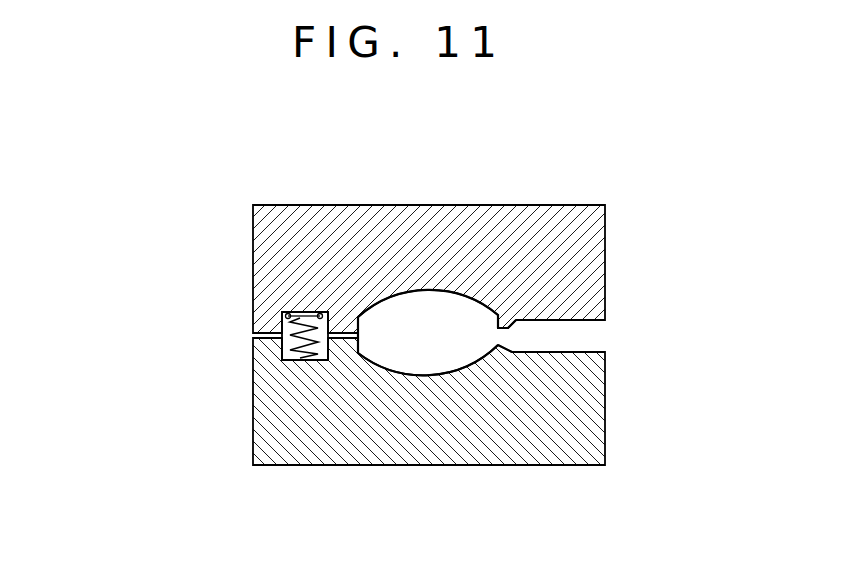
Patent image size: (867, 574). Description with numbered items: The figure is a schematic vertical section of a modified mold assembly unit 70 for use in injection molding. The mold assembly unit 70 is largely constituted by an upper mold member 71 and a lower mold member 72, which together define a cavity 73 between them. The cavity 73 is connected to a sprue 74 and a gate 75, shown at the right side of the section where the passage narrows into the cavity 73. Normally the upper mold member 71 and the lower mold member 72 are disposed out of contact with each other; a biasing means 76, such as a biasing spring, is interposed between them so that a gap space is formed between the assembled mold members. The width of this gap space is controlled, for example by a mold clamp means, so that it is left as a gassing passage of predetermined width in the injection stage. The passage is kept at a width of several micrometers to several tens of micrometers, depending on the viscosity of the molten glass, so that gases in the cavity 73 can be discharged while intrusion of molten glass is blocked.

The mold assembly unit 70 is at (236, 268).
The upper mold member 71 is at (573, 233).
The lower mold member 72 is at (585, 430).
The cavity 73 is at (427, 313).
The sprue 74 is at (590, 327).
The gate 75 is at (503, 340).
The biasing means 76 is at (290, 357).